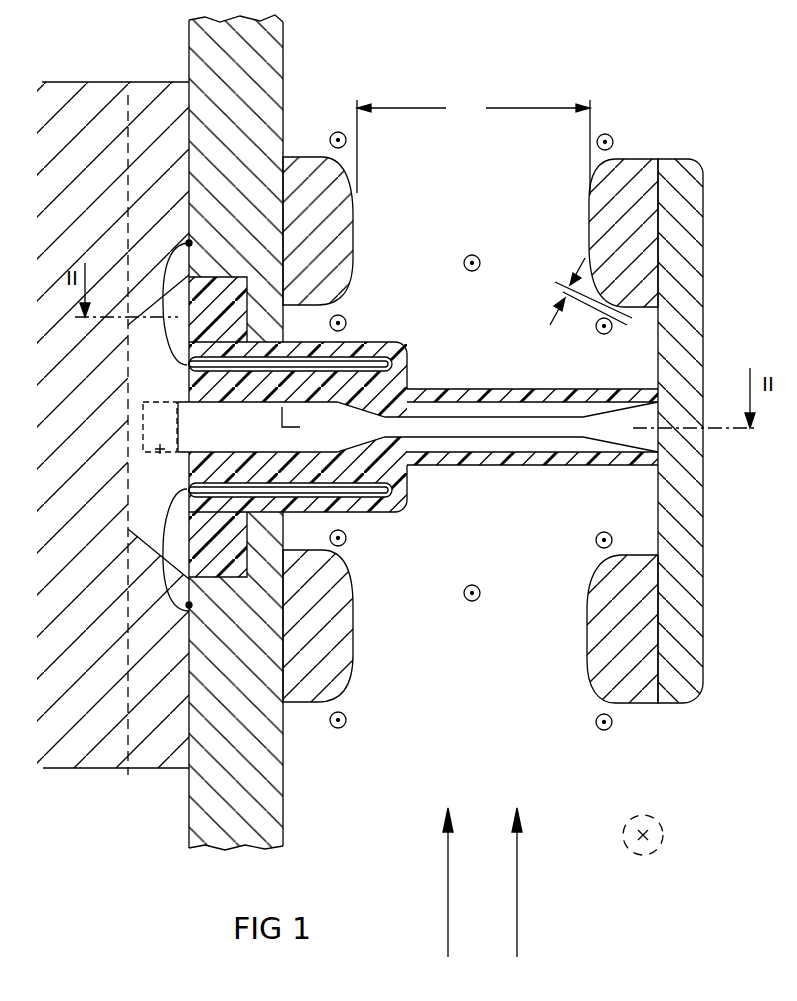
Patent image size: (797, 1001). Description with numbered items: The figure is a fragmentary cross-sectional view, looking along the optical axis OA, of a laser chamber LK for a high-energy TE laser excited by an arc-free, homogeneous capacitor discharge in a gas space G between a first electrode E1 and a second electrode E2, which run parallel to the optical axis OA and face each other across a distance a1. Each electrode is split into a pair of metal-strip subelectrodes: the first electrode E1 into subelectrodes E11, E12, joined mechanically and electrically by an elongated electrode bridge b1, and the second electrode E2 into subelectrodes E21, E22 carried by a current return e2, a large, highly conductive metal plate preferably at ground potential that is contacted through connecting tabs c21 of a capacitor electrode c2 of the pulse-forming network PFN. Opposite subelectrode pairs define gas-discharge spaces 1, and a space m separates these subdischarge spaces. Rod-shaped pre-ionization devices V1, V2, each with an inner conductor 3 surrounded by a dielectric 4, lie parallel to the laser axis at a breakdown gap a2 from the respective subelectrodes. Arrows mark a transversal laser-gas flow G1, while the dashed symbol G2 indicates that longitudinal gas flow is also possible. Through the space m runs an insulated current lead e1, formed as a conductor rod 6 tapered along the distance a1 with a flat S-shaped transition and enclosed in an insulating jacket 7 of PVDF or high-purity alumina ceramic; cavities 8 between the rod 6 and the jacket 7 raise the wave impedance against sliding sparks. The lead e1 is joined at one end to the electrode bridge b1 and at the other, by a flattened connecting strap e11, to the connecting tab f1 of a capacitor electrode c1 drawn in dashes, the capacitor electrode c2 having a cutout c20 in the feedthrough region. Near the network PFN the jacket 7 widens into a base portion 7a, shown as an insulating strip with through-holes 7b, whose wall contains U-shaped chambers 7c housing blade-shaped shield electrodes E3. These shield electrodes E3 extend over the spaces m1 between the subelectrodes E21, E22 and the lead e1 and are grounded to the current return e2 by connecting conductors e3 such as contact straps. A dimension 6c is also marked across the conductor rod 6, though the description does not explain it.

The gas-discharge space 1 is at (512, 220).
The inner conductor 3 is at (614, 141).
The dielectric 4 is at (590, 152).
The conductor rod 6 is at (437, 440).
The bore 6c is at (252, 402).
The insulating jacket 7 is at (422, 390).
The base portion 7a is at (197, 391).
The through-hole 7b is at (178, 402).
The chamber 7c is at (188, 360).
The cavity 8 is at (462, 405).
The distance a1 is at (473, 145).
The breakdown gap a2 is at (579, 291).
The electrode bridge b1 is at (692, 545).
The capacitor electrode c1 is at (128, 147).
The capacitor electrode c2 is at (168, 765).
The cutout c20 is at (147, 537).
The connecting tab c21 is at (188, 168).
The current lead e1 is at (495, 432).
The current return e2 is at (276, 48).
The connecting conductor e3 is at (174, 270).
The connecting strap e11 is at (162, 456).
The connecting tab f1 is at (141, 439).
The space m is at (522, 381).
The space m1 is at (297, 322).
The first electrode E1 is at (660, 250).
The subelectrode E11 is at (648, 170).
The subelectrode E12 is at (641, 688).
The second electrode E2 is at (312, 156).
The subelectrode E21 is at (348, 217).
The subelectrode E22 is at (338, 655).
The shield electrode E3 is at (368, 358).
The gas space G is at (534, 530).
The transversal laser-gas flow G1 is at (517, 907).
The longitudinal laser-gas flow G2 is at (621, 833).
The laser chamber LK is at (710, 738).
The optical axis OA is at (469, 254).
The pulse-forming network PFN is at (58, 673).
The pre-ionization device V1 is at (605, 133).
The pre-ionization device V2 is at (338, 131).